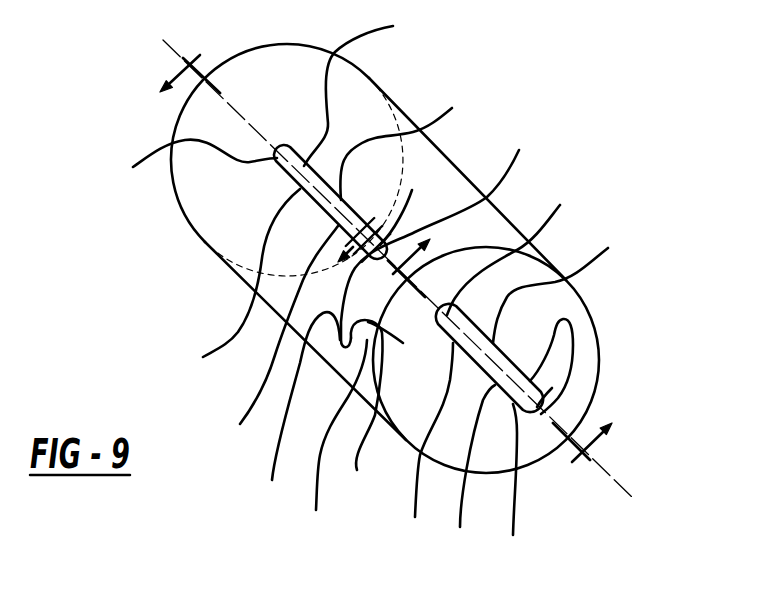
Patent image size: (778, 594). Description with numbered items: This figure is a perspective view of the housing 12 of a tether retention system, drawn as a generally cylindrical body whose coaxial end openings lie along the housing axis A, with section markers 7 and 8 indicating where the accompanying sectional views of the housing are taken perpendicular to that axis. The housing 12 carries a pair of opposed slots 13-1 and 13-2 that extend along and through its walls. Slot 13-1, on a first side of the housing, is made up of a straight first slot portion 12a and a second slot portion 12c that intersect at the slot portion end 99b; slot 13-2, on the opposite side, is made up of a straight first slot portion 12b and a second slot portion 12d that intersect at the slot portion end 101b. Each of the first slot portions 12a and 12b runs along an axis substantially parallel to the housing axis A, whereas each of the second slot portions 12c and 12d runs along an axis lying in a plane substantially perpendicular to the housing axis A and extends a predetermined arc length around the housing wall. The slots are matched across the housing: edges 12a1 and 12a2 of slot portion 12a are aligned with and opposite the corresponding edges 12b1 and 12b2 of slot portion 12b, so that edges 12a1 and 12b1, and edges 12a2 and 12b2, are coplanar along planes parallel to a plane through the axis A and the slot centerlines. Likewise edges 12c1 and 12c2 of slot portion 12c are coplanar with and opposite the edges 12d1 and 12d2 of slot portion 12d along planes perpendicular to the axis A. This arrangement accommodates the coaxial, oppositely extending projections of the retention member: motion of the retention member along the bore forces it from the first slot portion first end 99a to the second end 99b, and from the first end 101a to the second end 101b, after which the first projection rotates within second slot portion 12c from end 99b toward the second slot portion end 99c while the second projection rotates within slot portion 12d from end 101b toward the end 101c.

The housing 12 is at (240, 220).
The first slot portion 12a is at (235, 283).
The edge of slot portion 12a 12a1 is at (411, 139).
The edge of slot portion 12a 12a2 is at (271, 334).
The first slot portion 12b is at (425, 448).
The edge of slot portion 12b 12b1 is at (567, 282).
The edge of slot portion 12b 12b2 is at (467, 471).
The second slot portion 12c is at (441, 236).
The edge of slot portion 12c 12c1 is at (291, 404).
The edge of slot portion 12c 12c2 is at (323, 437).
The second slot portion 12d is at (507, 484).
The edge of slot portion 12d 12d1 is at (568, 390).
The edge of slot portion 12d 12d2 is at (573, 349).
The slot 13-1 is at (367, 87).
The slot 13-2 is at (364, 407).
The first slot portion first end 99a is at (246, 199).
The first slot portion second end 99b is at (388, 212).
The second slot portion end 99c is at (400, 345).
The first slot portion first end 101a is at (511, 295).
The first slot portion second end 101b is at (538, 418).
The second slot portion end 101c is at (564, 321).
The section line 7 is at (512, 341).
The section line 8 is at (245, 182).
The housing axis A is at (615, 479).